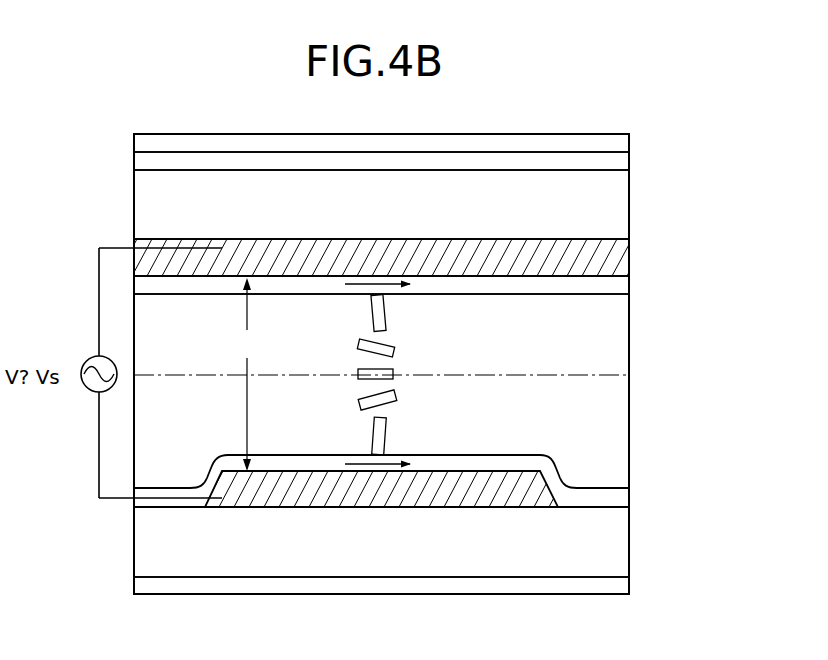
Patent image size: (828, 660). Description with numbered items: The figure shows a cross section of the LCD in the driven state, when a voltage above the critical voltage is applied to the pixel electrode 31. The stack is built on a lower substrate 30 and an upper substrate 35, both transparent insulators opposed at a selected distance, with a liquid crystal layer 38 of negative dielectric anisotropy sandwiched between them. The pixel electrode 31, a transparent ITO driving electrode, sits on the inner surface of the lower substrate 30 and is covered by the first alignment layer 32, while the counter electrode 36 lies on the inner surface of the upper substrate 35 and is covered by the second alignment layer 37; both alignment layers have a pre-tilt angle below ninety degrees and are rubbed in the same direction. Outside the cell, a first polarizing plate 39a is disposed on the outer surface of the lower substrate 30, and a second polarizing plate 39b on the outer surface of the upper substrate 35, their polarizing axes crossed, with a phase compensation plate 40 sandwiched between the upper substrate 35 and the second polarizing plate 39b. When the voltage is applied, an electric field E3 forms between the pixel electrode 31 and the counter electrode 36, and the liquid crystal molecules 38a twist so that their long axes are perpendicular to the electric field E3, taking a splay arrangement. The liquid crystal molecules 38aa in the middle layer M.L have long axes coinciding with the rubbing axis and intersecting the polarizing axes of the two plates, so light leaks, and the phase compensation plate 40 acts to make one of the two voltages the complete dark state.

The second polarizing plate 39b is at (617, 146).
The phase compensation plate 40 is at (617, 160).
The upper substrate 35 is at (617, 206).
The counter electrode 36 is at (617, 246).
The second alignment layer 37 is at (617, 284).
The liquid crystal layer 38 is at (617, 316).
The liquid crystal molecules 38a is at (397, 350).
The liquid crystal molecules in the middle layer 38aa is at (393, 378).
The middle layer M.L is at (585, 375).
The electric field E3 is at (247, 374).
The pixel electrode 31 is at (533, 490).
The first alignment layer 32 is at (617, 500).
The lower substrate 30 is at (617, 546).
The first polarizing plate 39a is at (617, 587).